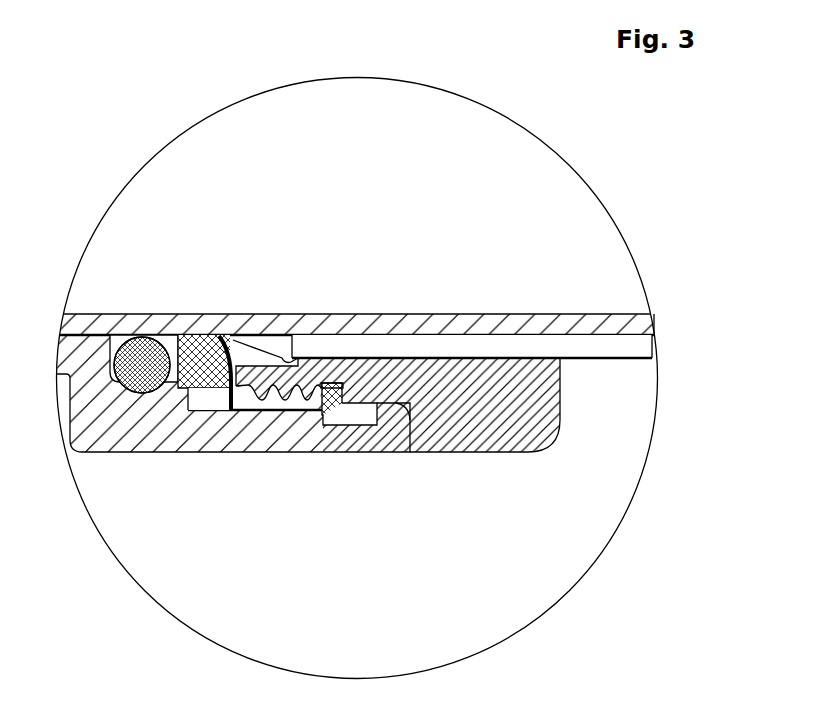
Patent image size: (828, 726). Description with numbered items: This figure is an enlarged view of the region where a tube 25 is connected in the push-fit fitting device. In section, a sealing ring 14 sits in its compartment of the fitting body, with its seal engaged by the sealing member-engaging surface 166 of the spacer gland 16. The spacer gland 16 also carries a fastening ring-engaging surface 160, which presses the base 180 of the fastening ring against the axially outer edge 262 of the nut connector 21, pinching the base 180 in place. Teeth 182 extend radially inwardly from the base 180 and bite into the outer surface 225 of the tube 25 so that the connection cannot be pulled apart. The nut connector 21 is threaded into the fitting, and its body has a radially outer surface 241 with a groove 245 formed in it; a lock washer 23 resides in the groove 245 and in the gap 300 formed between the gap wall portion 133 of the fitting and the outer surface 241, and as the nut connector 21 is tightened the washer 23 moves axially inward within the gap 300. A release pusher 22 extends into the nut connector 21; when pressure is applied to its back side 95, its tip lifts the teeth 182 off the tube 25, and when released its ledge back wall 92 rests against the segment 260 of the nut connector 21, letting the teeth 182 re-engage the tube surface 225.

The sealing ring 14 is at (141, 345).
The spacer gland 16 is at (183, 334).
The nut connector 21 is at (481, 455).
The release pusher 22 is at (379, 346).
The lock washer 23 is at (332, 418).
The tube 25 is at (574, 311).
The ledge back wall 92 is at (292, 358).
The back side 95 is at (657, 340).
The gap wall portion 133 is at (369, 426).
The fastening ring-engaging surface 160 is at (222, 381).
The sealing member-engaging surface 166 is at (175, 381).
The base 180 is at (231, 413).
The teeth 182 is at (219, 334).
The outer surface 225 is at (604, 340).
The radially outer surface 241 is at (374, 410).
The groove 245 is at (329, 383).
The segment 260 is at (301, 355).
The axially outer edge 262 is at (251, 390).
The gap 300 is at (356, 420).